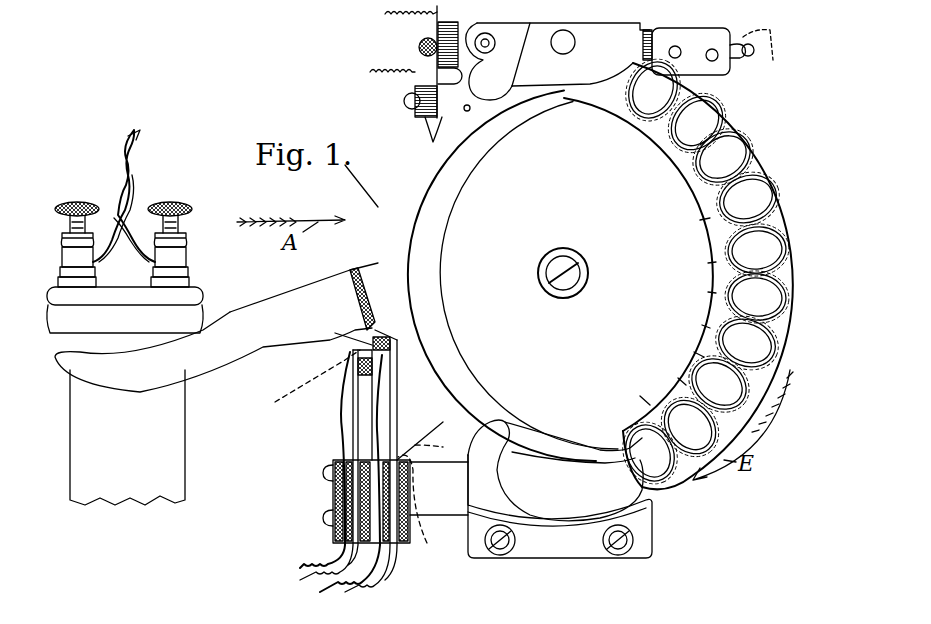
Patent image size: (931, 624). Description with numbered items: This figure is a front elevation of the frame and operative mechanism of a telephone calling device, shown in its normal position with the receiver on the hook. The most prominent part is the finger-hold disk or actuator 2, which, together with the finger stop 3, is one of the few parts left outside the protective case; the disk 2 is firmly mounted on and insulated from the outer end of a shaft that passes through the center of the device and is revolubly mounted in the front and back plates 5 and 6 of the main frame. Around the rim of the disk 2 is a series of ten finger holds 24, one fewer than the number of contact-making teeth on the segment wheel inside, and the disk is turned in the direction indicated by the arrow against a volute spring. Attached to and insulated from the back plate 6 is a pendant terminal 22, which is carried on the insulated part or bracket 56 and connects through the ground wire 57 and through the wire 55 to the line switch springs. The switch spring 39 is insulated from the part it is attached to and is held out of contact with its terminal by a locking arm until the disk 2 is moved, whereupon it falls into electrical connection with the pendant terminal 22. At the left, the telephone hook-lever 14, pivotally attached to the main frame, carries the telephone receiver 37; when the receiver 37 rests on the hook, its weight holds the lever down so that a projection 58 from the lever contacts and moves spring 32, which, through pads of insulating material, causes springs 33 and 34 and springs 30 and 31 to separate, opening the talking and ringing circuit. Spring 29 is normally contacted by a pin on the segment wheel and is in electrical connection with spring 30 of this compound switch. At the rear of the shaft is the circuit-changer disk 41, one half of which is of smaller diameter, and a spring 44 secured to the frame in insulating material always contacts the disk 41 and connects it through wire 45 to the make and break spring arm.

The finger-hold disk 2 is at (742, 148).
The finger stop 3 is at (478, 480).
The front plate 5 is at (560, 489).
The back plate 6 is at (558, 61).
The telephone hook-lever 14 is at (300, 323).
The pendant terminal 22 is at (428, 135).
The finger holds 24 is at (743, 196).
The spring 29 is at (395, 501).
The switch spring 30 is at (424, 508).
The switch spring 31 is at (383, 430).
The switch spring 32 is at (372, 390).
The switch spring 33 is at (357, 422).
The switch spring 34 is at (342, 437).
The telephone receiver 37 is at (125, 317).
The switch spring 39 is at (436, 72).
The disk 41 is at (620, 612).
The spring 44 is at (556, 612).
The wire 45 is at (713, 58).
The wire 55 is at (370, 72).
The insulated bracket 56 is at (464, 58).
The ground wire 57 is at (385, 14).
The projection 58 is at (302, 388).